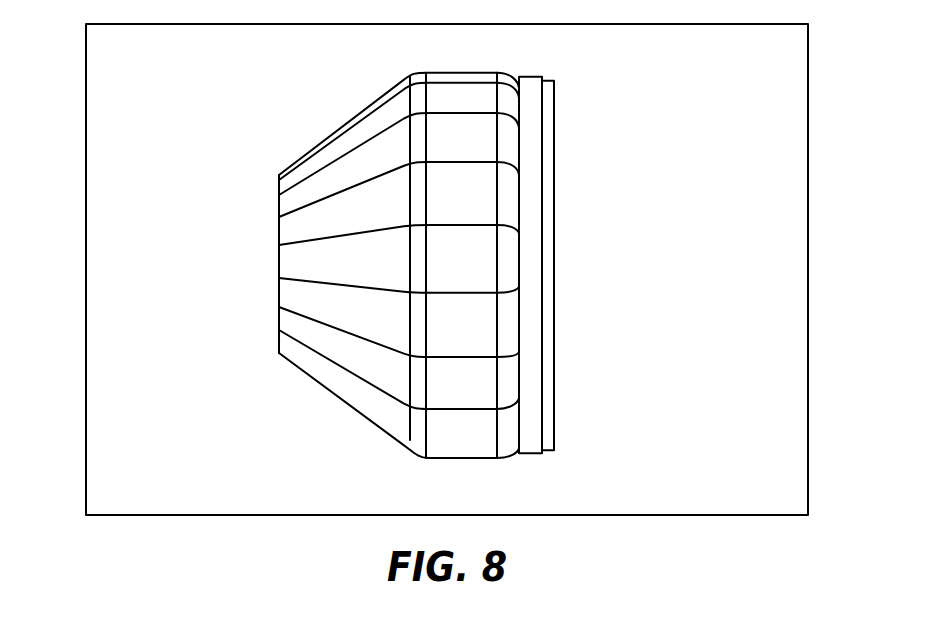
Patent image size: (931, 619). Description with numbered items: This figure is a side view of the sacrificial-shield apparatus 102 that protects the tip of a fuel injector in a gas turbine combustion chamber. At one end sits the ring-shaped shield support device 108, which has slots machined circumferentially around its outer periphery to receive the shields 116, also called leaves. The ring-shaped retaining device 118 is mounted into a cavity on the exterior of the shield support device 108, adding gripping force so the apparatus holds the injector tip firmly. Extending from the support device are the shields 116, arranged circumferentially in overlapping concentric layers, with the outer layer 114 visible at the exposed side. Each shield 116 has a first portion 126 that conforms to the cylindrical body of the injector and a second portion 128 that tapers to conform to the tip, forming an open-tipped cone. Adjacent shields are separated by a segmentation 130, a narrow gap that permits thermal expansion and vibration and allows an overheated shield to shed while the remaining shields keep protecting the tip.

The apparatus 102 is at (575, 218).
The shield support device 108 is at (548, 312).
The outer layer 114 is at (277, 329).
The shield 116 is at (479, 272).
The retaining device 118 is at (532, 227).
The first portion 126 is at (463, 380).
The second portion 128 is at (378, 363).
The segmentation 130 is at (360, 339).